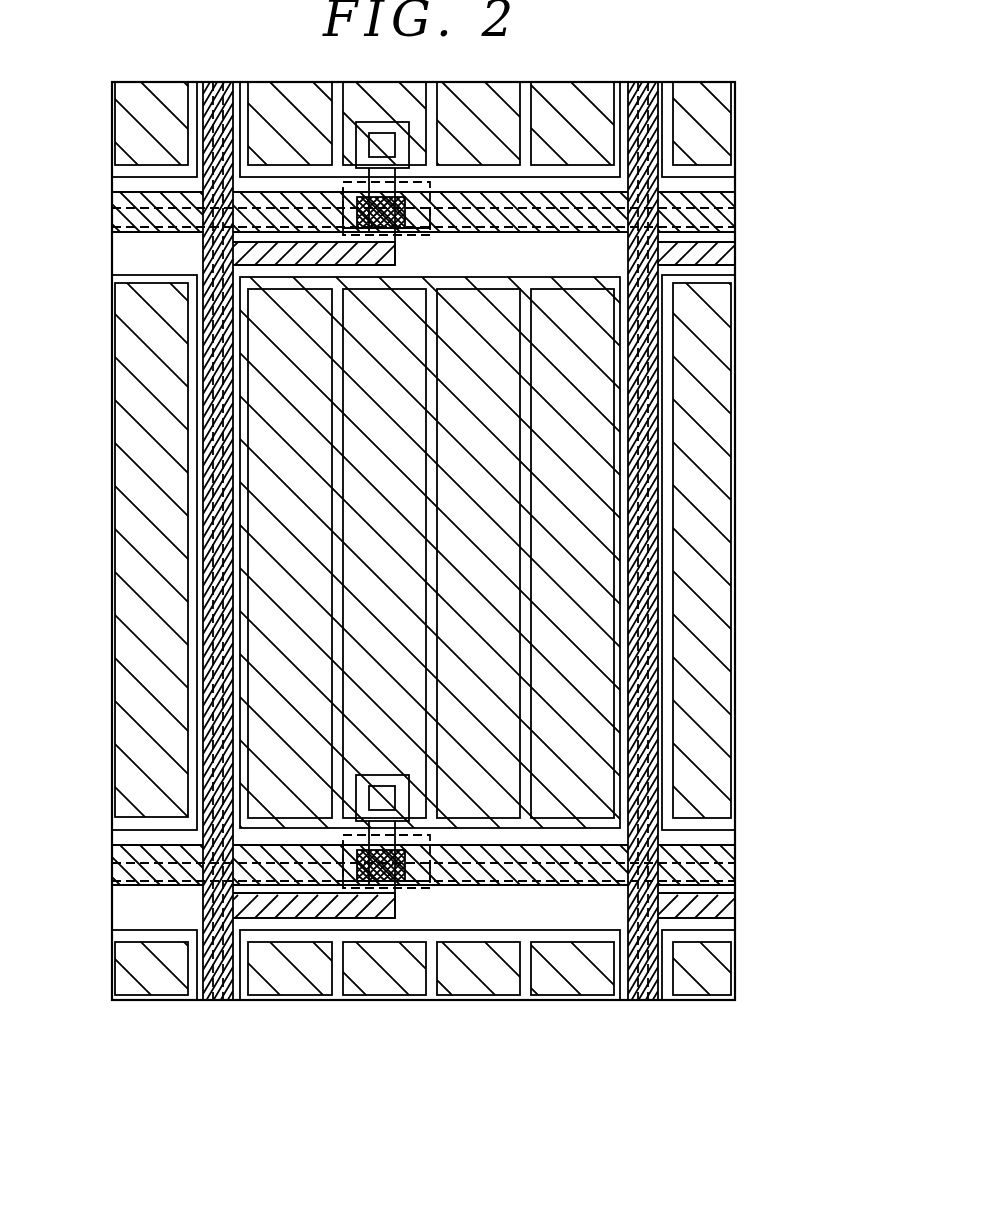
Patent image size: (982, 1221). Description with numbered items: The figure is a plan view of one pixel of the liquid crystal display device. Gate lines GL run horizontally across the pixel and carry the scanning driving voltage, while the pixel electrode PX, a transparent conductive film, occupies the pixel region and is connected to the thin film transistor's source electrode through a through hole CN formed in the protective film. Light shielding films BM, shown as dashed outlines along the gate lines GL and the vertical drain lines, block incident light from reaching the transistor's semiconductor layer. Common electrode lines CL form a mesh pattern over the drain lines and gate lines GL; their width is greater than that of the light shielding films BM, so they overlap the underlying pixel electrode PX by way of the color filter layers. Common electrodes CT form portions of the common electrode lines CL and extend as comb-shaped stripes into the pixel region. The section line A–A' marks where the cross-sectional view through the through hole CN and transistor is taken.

The pixel electrode PX is at (147, 274).
The common electrode CT is at (335, 427).
The gate line GL is at (737, 214).
The common electrode line CL is at (55, 817).
The light shielding film BM is at (528, 884).
The through hole CN is at (358, 797).
The section line A is at (396, 821).
The section line A' is at (601, 718).